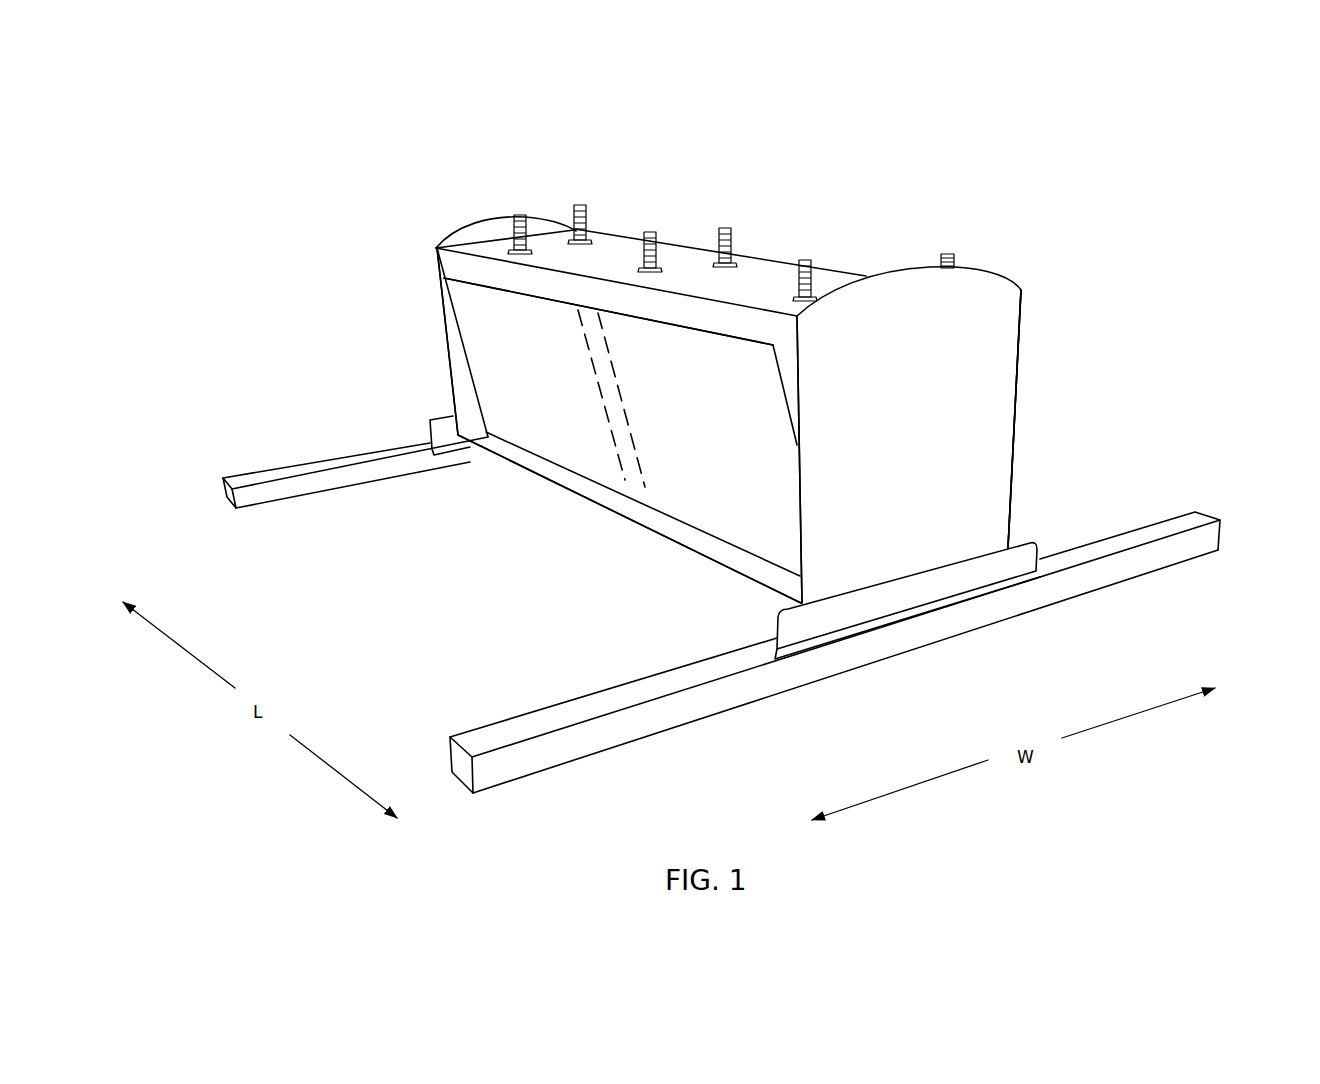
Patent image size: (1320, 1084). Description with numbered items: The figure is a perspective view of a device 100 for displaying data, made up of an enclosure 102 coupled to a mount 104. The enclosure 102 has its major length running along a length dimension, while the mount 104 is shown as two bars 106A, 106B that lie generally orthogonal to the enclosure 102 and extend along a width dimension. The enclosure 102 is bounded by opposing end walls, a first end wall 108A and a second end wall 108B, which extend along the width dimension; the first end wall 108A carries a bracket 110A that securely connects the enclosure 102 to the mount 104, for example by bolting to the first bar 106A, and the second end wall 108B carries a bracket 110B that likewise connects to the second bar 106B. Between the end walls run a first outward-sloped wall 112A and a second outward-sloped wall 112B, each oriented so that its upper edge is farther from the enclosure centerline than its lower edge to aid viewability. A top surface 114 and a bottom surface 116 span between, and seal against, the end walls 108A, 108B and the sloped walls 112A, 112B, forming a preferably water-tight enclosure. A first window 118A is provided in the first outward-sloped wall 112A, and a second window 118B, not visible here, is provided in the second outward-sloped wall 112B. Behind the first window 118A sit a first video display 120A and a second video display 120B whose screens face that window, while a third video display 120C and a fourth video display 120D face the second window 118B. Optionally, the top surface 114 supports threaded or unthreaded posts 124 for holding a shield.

The device 100 is at (313, 173).
The enclosure 102 is at (1102, 358).
The mount 104 is at (1067, 502).
The first bar 106A is at (517, 770).
The second bar 106B is at (268, 488).
The first end wall 108A is at (903, 548).
The second end wall 108B is at (455, 390).
The bracket 110A is at (822, 622).
The bracket 110B is at (443, 448).
The first outward-sloped wall 112A is at (455, 263).
The second outward-sloped wall 112B is at (1052, 297).
The top surface 114 is at (673, 265).
The bottom surface 116 is at (695, 578).
The first window 118A is at (487, 337).
The second window 118B is at (1192, 312).
The first video display 120A is at (562, 430).
The second video display 120B is at (697, 487).
The third video display 120C is at (799, 459).
The fourth video display 120D is at (1014, 419).
The post 124 is at (587, 212).